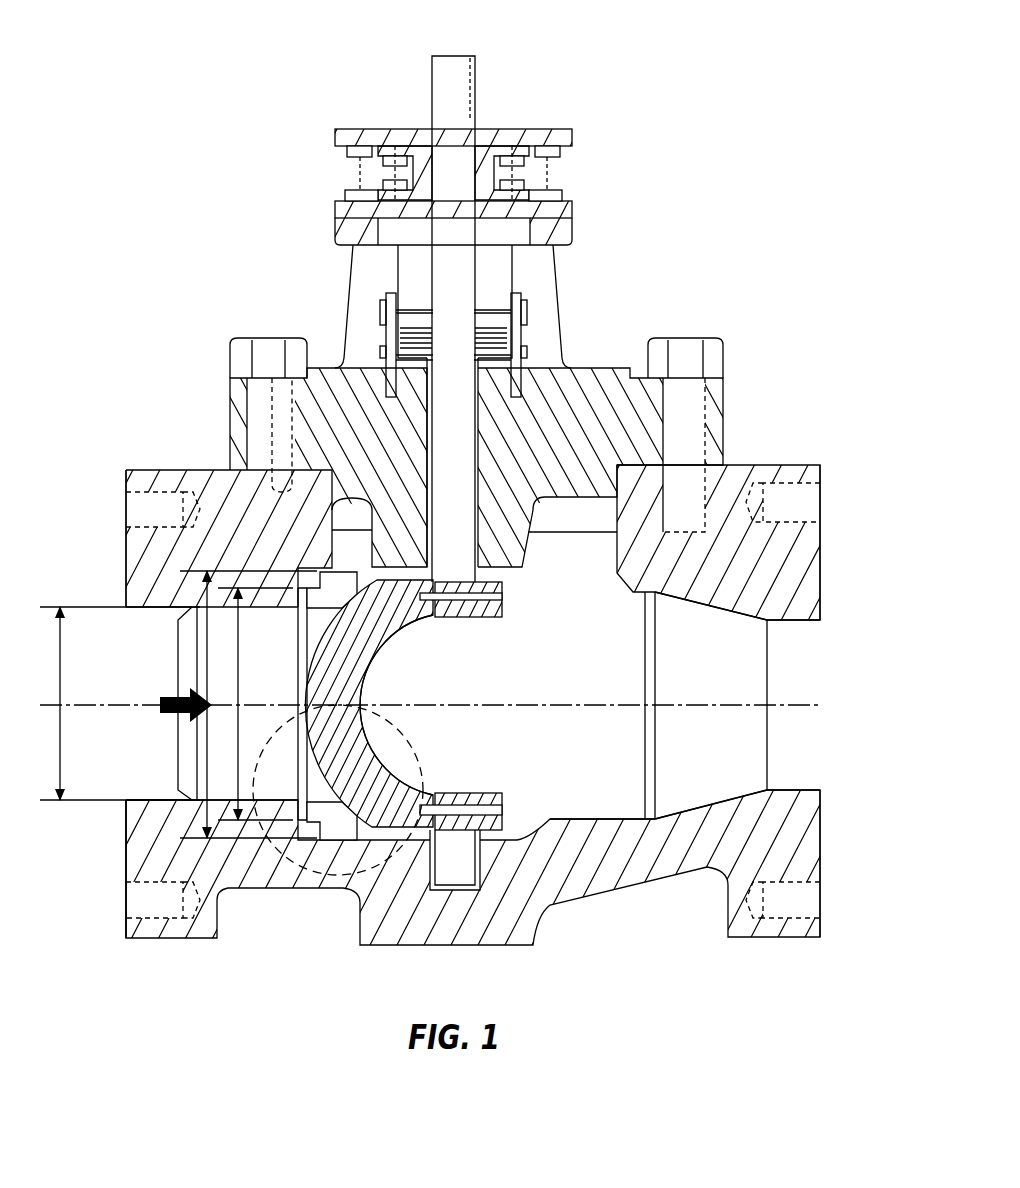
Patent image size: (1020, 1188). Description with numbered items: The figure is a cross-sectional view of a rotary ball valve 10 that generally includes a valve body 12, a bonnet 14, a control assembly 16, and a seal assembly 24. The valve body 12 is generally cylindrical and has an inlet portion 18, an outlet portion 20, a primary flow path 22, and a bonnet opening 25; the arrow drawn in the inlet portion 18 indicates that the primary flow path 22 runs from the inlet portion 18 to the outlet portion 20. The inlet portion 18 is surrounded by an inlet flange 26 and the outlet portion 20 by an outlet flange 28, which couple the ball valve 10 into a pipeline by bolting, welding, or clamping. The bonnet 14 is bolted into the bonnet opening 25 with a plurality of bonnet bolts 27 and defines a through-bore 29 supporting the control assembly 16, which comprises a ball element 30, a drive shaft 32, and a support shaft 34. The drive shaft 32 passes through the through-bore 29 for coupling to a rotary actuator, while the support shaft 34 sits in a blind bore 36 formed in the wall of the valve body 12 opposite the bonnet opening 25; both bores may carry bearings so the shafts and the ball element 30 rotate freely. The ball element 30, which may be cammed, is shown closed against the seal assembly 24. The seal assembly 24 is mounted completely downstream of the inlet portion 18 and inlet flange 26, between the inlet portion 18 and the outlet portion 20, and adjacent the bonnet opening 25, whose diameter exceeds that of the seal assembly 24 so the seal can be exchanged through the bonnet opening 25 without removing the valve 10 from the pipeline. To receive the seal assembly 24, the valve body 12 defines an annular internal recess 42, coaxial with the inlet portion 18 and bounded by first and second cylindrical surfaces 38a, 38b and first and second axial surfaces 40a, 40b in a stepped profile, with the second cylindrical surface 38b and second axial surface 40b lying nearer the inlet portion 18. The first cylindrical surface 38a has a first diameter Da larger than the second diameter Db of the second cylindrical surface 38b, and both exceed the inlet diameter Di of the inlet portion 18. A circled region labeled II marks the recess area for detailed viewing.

The rotary ball valve 10 is at (651, 98).
The valve body 12 is at (178, 466).
The bonnet 14 is at (604, 362).
The control assembly 16 is at (480, 75).
The inlet portion 18 is at (156, 767).
The outlet portion 20 is at (793, 650).
The primary flow path 22 is at (194, 700).
The seal assembly 24 is at (366, 598).
The bonnet opening 25 is at (612, 511).
The inlet flange 26 is at (130, 540).
The bonnet bolts 27 is at (250, 346).
The outlet flange 28 is at (812, 540).
The through-bore 29 is at (470, 462).
The ball element 30 is at (362, 653).
The drive shaft 32 is at (445, 173).
The support shaft 34 is at (472, 855).
The blind bore 36 is at (462, 855).
The first cylindrical surface 38a is at (390, 855).
The second cylindrical surface 38b is at (407, 860).
The first axial surface 40a is at (352, 840).
The second axial surface 40b is at (302, 812).
The internal recess 42 is at (342, 562).
The first diameter Da is at (212, 692).
The second diameter Db is at (242, 692).
The inlet diameter Di is at (120, 703).
The detail view II is at (388, 742).